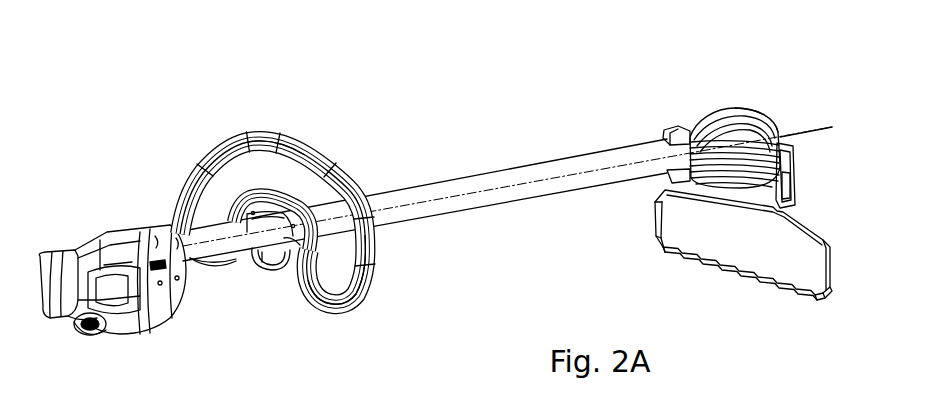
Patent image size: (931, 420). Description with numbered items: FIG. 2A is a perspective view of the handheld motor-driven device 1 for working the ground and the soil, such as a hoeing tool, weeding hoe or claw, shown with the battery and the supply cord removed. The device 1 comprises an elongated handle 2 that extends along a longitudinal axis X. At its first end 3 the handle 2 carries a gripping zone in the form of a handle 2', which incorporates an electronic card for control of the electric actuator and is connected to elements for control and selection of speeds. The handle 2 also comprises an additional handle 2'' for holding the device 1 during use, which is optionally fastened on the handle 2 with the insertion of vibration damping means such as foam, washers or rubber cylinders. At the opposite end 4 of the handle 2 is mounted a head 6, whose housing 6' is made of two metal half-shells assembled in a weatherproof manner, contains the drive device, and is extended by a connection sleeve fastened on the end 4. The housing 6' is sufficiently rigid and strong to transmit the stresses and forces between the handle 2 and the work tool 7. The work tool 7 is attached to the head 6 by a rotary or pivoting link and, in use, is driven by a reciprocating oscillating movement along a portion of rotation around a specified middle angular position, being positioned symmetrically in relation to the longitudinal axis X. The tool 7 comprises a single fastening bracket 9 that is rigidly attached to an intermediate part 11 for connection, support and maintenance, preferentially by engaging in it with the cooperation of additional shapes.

The handheld motor-driven device 1 is at (321, 320).
The handle 2 is at (507, 181).
The handle 2' is at (118, 306).
The additional handle 2'' is at (289, 109).
The first end 3 is at (210, 106).
The opposite end 4 is at (696, 108).
The head 6 is at (735, 101).
The housing 6' is at (767, 95).
The work tool 7 is at (622, 224).
The fastening bracket 9 is at (786, 185).
The intermediate part 11 is at (804, 184).
The longitudinal axis X is at (798, 129).